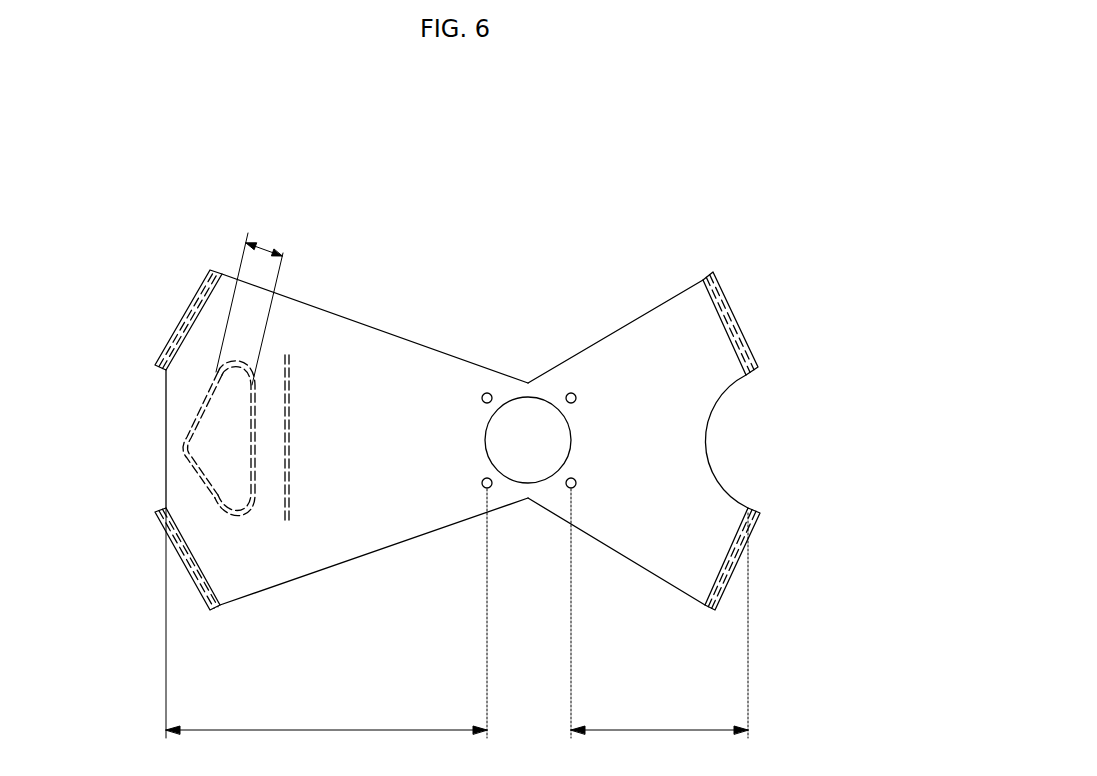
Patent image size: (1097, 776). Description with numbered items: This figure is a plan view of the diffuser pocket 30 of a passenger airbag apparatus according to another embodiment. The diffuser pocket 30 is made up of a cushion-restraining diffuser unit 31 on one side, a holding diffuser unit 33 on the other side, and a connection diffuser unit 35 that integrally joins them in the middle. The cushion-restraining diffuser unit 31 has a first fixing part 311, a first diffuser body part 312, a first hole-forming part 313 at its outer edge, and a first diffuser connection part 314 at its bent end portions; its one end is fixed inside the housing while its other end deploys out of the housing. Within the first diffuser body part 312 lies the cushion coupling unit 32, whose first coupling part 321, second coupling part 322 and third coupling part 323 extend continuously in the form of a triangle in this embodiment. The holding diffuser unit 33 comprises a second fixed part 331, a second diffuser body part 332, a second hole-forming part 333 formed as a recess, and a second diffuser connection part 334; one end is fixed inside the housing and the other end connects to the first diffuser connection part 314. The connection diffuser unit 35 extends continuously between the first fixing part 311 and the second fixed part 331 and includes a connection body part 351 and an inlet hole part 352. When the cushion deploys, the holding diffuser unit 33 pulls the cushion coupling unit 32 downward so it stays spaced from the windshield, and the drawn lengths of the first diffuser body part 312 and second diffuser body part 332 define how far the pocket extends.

The diffuser pocket 30 is at (788, 153).
The cushion-restraining diffuser unit 31 is at (352, 318).
The first fixing part 311 is at (487, 489).
The first diffuser body part 312 is at (383, 510).
The first hole-forming part 313 is at (166, 458).
The first diffuser connection part 314 is at (160, 352).
The cushion coupling unit 32 is at (256, 346).
The first coupling part 321 is at (182, 426).
The second coupling part 322 is at (217, 367).
The third coupling part 323 is at (258, 472).
The holding diffuser unit 33 is at (652, 310).
The second fixed part 331 is at (571, 489).
The second diffuser body part 332 is at (660, 545).
The second hole-forming part 333 is at (710, 441).
The second diffuser connection part 334 is at (740, 338).
The connection diffuser unit 35 is at (525, 362).
The connection body part 351 is at (503, 390).
The inlet hole part 352 is at (527, 427).